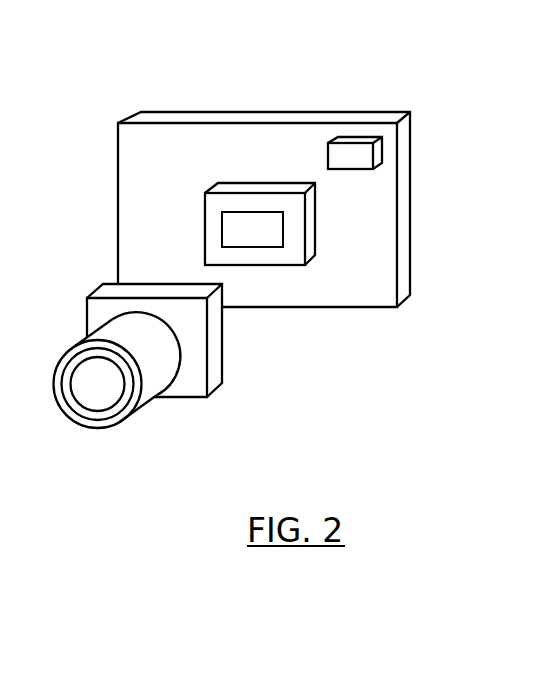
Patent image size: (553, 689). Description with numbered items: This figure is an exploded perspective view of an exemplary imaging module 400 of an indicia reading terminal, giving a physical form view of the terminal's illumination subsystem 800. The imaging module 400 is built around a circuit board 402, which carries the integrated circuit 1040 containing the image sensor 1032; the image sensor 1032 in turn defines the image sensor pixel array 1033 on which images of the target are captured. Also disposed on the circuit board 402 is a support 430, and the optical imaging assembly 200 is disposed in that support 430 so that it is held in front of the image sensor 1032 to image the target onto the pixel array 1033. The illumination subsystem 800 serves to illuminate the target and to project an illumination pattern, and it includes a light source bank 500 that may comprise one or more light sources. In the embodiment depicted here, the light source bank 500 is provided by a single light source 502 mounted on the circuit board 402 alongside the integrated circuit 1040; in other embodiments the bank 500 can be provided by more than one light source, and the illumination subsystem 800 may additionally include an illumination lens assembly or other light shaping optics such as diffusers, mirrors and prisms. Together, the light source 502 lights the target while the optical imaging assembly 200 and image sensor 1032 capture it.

The imaging module 400 is at (272, 94).
The circuit board 402 is at (375, 292).
The single light source 502 is at (363, 159).
The illumination subsystem 800 is at (359, 182).
The light source bank 500 is at (396, 154).
The integrated circuit 1040 is at (318, 223).
The image sensor 1032 is at (269, 285).
The image sensor pixel array 1033 is at (252, 229).
The support 430 is at (148, 385).
The optical imaging assembly 200 is at (100, 395).